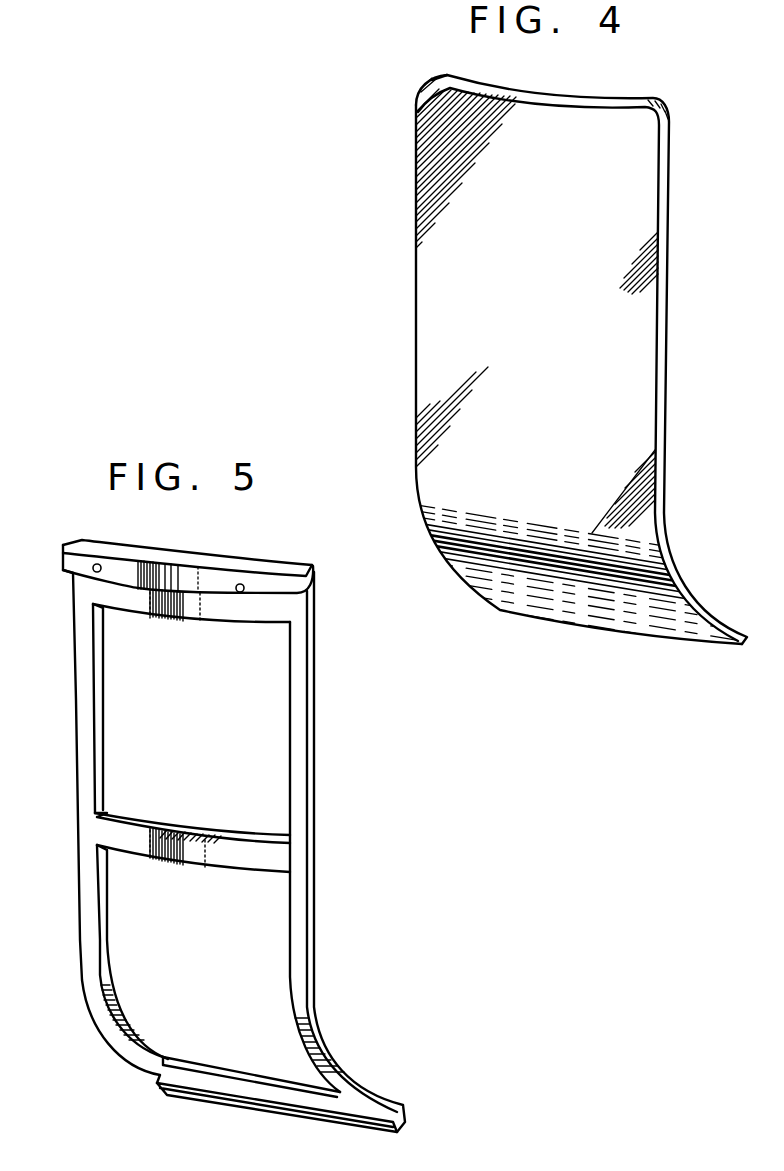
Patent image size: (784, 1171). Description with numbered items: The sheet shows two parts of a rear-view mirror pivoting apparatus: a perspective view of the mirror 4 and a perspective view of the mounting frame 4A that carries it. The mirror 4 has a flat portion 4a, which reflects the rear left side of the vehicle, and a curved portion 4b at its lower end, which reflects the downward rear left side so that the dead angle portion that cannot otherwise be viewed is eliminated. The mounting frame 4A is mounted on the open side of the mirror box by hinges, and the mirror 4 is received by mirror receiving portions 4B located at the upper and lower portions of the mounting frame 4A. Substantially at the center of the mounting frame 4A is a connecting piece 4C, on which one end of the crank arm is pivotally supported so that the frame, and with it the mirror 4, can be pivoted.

In FIG. 4, the mirror 4 is at (425, 355).
In FIG. 4, the flat portion 4a is at (445, 248).
In FIG. 4, the curved portion 4b is at (628, 612).
In FIG. 5, the mounting frame 4A is at (300, 812).
In FIG. 5, the mirror receiving portion 4B is at (307, 582).
In FIG. 5, the connecting piece 4C is at (172, 863).